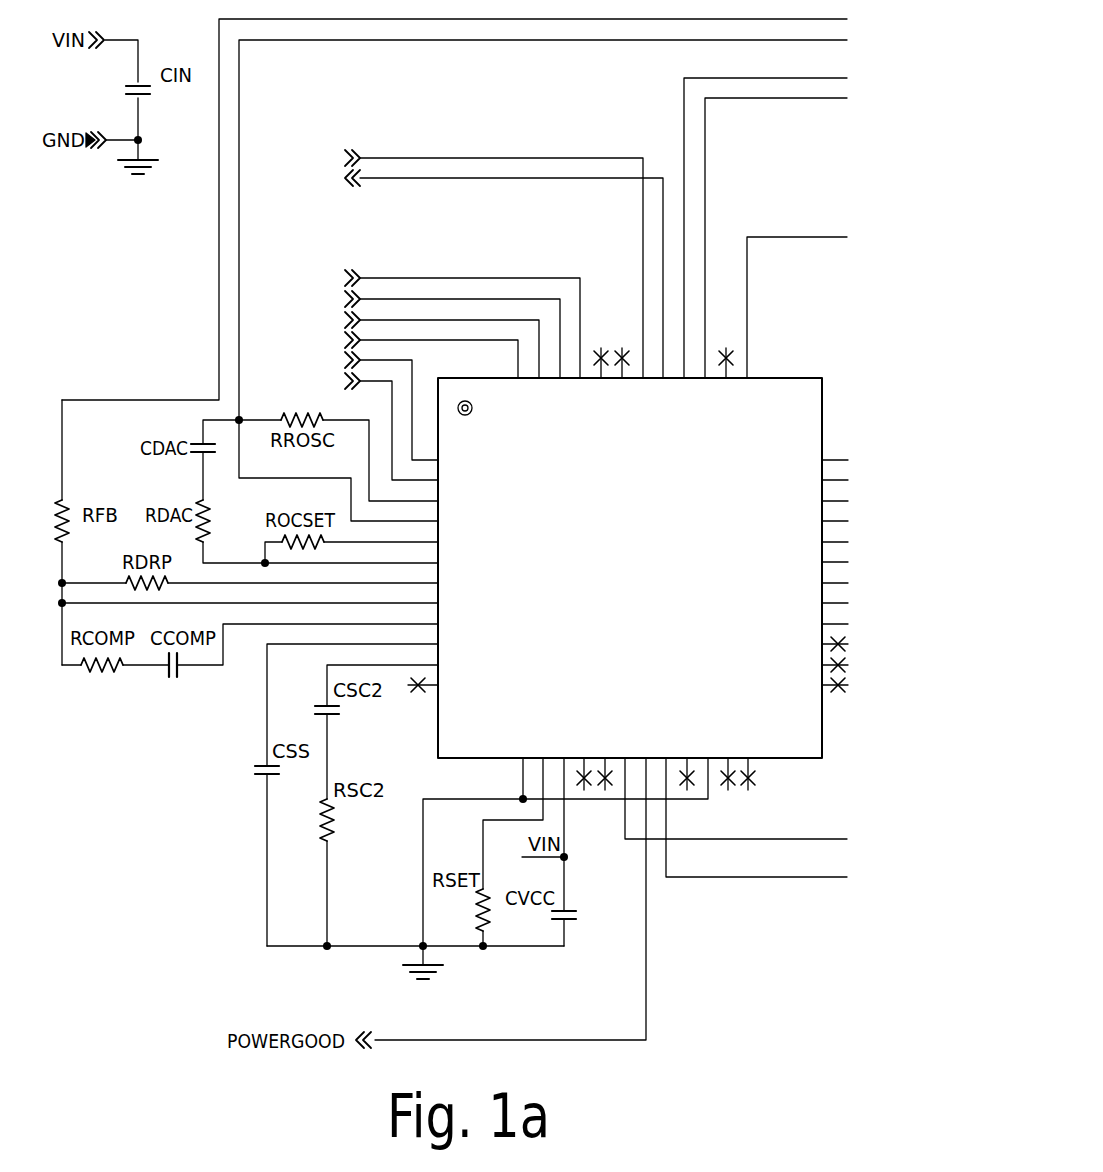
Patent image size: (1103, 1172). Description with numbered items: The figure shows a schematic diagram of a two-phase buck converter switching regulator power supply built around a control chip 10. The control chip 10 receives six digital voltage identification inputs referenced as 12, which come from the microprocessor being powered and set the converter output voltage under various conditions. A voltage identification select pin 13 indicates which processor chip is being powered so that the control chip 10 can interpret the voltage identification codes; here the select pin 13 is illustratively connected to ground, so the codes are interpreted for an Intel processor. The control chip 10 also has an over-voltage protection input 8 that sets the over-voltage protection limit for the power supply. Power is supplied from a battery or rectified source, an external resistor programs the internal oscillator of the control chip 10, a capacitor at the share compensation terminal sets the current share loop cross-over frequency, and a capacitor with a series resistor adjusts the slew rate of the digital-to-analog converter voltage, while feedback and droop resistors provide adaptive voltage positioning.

The OVP input 8 is at (357, 190).
The control chip 10 is at (785, 748).
The digital inputs VID0-VID5 12 is at (425, 268).
The VID_SEL pin 13 is at (697, 800).